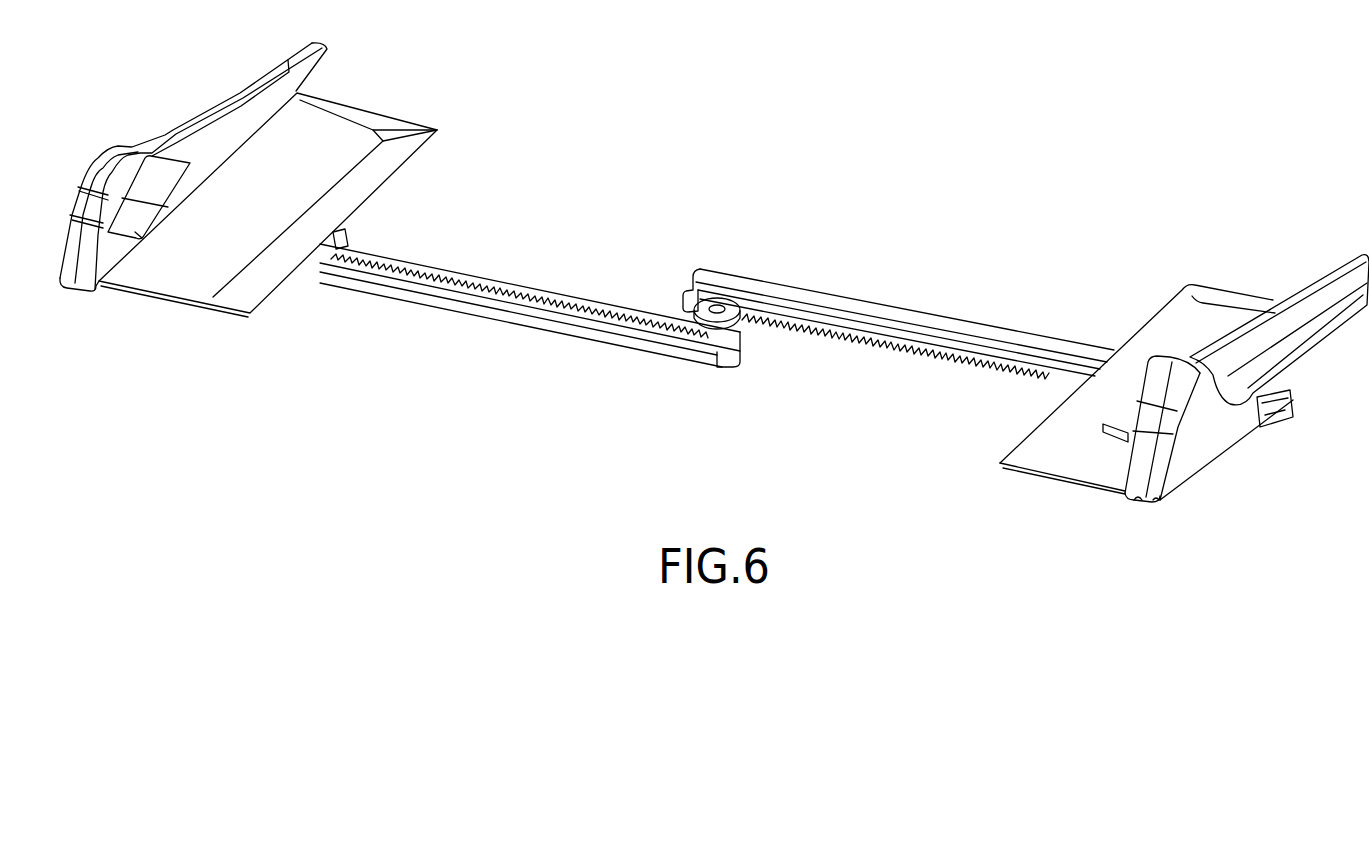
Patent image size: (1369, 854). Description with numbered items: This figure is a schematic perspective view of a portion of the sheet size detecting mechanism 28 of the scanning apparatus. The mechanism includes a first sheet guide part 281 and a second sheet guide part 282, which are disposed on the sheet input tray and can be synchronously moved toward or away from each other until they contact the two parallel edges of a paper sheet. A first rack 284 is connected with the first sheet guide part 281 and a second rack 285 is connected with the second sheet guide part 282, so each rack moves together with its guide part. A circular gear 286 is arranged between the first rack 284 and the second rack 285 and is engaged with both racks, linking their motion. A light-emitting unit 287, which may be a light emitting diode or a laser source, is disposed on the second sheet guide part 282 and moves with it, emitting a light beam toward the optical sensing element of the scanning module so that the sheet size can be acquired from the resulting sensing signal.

The sheet size detecting mechanism 28 is at (1014, 95).
The first sheet guide part 281 is at (210, 133).
The second sheet guide part 282 is at (1203, 448).
The first rack 284 is at (515, 313).
The second rack 285 is at (890, 313).
The circular gear 286 is at (757, 326).
The light-emitting unit 287 is at (1128, 500).